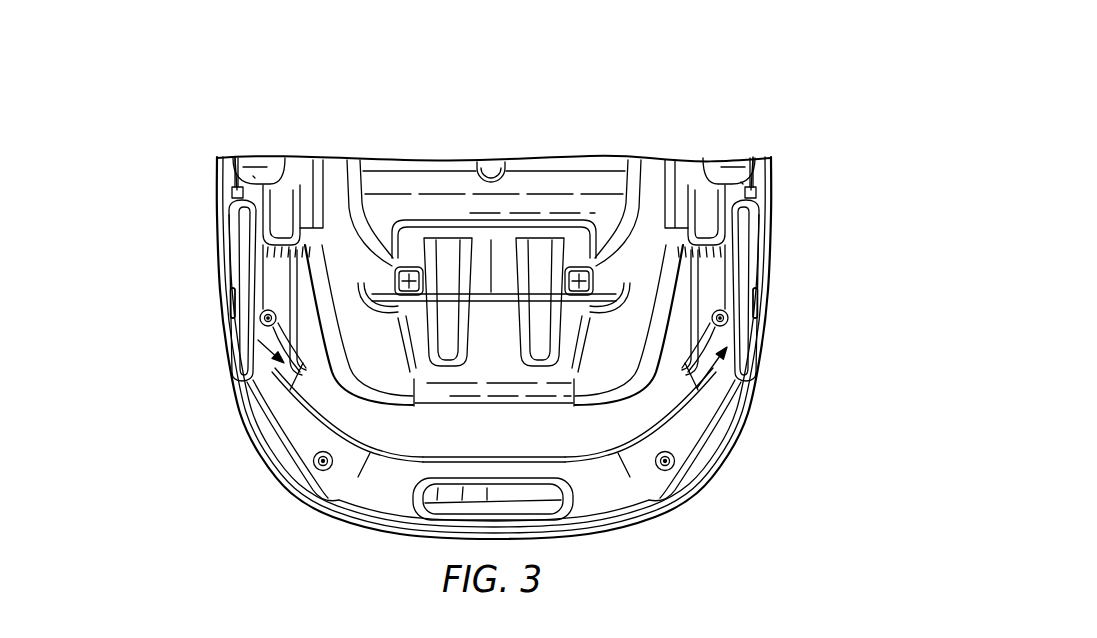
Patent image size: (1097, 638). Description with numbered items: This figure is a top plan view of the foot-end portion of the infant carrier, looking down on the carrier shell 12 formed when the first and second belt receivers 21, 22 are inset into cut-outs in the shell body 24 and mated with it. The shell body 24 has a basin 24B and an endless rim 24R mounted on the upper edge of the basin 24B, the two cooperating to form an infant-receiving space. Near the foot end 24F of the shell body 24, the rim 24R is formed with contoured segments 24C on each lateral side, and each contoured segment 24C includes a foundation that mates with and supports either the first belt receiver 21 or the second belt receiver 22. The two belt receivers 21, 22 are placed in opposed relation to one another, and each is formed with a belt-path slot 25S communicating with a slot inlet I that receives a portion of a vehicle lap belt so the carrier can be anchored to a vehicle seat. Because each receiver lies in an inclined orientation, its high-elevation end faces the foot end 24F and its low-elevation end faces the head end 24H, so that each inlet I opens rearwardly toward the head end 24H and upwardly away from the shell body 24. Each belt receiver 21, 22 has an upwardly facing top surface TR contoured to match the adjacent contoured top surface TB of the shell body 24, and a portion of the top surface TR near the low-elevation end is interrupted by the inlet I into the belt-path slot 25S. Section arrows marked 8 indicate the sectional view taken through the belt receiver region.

The carrier shell 12 is at (322, 140).
The shell body 24 is at (893, 56).
The head end 24H is at (412, 70).
The foot end 24F is at (726, 468).
The basin 24B is at (551, 208).
The contoured segments 24C is at (250, 430).
The rim 24R is at (660, 526).
The first belt receiver 21 is at (325, 420).
The second belt receiver 22 is at (680, 392).
The belt-path slot 25S is at (213, 308).
The section line 8- 8 is at (240, 165).
The contoured top surface of shell body TB is at (235, 157).
The top surface of belt receiver TR is at (757, 253).
The slot inlet I is at (106, 193).